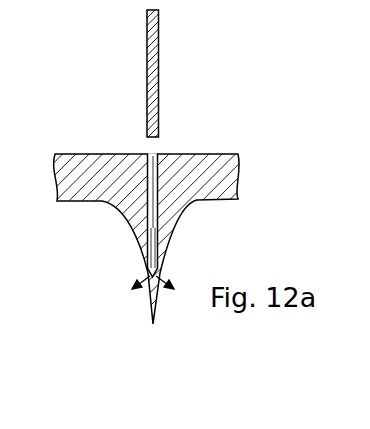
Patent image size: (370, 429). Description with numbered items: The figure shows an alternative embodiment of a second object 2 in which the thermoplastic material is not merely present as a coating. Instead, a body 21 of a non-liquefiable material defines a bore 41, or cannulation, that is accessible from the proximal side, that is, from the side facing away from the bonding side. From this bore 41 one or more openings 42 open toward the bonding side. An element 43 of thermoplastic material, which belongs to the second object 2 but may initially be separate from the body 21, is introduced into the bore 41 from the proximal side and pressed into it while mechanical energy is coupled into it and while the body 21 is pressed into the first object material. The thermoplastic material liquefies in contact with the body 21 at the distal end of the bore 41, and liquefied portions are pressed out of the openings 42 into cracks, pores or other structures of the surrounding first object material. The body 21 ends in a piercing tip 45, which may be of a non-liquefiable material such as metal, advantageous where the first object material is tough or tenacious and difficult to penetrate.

The second object 2 is at (231, 136).
The body 21 is at (100, 152).
The bore 41 is at (152, 216).
The openings 42 is at (138, 275).
The element 43 is at (160, 50).
The piercing tip 45 is at (150, 304).